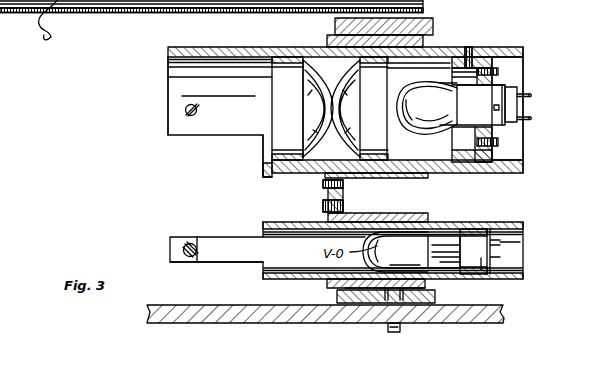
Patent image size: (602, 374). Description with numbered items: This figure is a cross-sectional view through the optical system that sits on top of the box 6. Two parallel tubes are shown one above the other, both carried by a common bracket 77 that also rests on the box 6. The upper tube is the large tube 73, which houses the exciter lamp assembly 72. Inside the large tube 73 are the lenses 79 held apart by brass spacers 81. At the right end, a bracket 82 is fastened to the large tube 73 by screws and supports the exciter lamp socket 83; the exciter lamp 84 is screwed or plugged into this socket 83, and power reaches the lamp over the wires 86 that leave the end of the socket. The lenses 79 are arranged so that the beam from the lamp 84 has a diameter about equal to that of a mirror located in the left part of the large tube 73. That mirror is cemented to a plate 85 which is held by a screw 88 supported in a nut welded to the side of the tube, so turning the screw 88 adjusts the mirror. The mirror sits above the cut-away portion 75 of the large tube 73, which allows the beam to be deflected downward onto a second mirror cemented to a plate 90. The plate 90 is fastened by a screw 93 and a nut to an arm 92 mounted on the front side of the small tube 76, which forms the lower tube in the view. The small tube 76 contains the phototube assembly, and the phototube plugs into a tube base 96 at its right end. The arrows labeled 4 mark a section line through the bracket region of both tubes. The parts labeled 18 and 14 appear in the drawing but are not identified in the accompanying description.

The mounting bracket 18 is at (433, 18).
The section line 4 is at (267, 43).
The exciter lamp assembly 72 is at (168, 140).
The large tube 73 is at (263, 177).
The cut-away portion 75 is at (253, 142).
The plate 85 is at (186, 113).
The screw 88 is at (197, 108).
The brass spacers 81 is at (303, 57).
The lenses 79 is at (332, 133).
The exciter lamp socket 83 is at (486, 95).
The wires 86 is at (531, 118).
The bracket 82 is at (488, 168).
The exciter lamp 84 is at (404, 128).
The bracket 77 is at (408, 190).
The detector housing 14 is at (170, 232).
The plate 90 is at (187, 245).
The screw 93 is at (205, 246).
The arm 92 is at (224, 253).
The small tube 76 is at (490, 222).
The tube base 96 is at (478, 275).
The box 6 is at (489, 315).